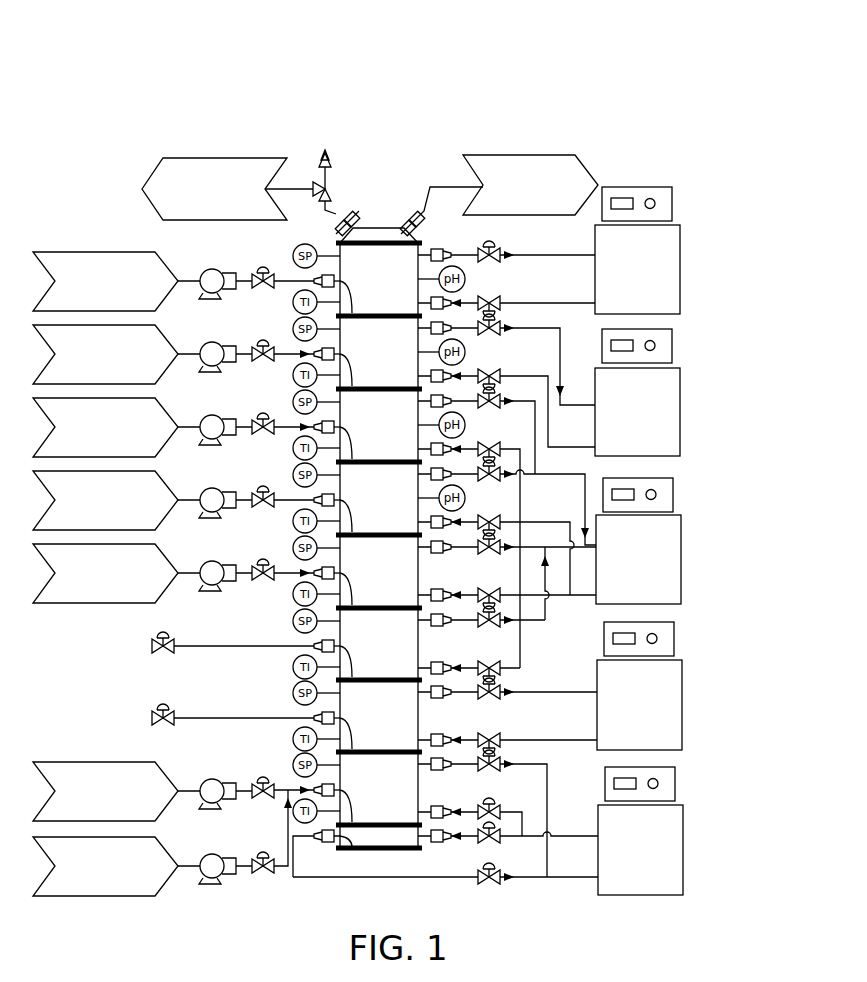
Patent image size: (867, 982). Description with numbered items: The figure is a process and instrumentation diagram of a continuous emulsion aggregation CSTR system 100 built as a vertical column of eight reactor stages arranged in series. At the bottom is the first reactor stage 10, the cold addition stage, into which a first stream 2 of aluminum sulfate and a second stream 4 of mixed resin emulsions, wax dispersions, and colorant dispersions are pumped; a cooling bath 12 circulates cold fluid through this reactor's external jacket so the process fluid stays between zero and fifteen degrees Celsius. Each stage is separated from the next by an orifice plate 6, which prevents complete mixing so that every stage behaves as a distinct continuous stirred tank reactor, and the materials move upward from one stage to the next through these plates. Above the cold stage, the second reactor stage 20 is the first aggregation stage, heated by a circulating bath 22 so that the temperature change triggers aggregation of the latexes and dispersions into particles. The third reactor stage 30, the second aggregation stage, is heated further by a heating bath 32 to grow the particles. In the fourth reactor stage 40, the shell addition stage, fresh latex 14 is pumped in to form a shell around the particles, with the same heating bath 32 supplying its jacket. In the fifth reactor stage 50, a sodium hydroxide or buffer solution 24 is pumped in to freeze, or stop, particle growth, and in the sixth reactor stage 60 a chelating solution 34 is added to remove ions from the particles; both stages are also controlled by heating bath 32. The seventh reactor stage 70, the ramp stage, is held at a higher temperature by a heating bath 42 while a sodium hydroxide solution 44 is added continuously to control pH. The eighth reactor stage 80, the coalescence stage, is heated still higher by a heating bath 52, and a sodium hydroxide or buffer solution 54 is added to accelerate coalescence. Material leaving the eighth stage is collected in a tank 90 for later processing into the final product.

The CSTR system 100 is at (122, 80).
The tank 90 is at (588, 163).
The eighth reactor stage 80 is at (410, 267).
The seventh reactor stage 70 is at (410, 340).
The sixth reactor stage 60 is at (410, 413).
The fifth reactor stage 50 is at (410, 486).
The fourth reactor stage 40 is at (420, 579).
The third reactor stage 30 is at (420, 652).
The second reactor stage 20 is at (420, 724).
The first reactor stage 10 is at (420, 796).
The orifice plate 6 is at (314, 284).
The heating bath 52 is at (713, 228).
The heating bath 42 is at (713, 371).
The heating bath 32 is at (713, 518).
The circulating bath 22 is at (713, 663).
The cooling bath 12 is at (713, 808).
The buffer solution 54 is at (162, 262).
The sodium hydroxide solution 44 is at (162, 335).
The chelating solution 34 is at (162, 408).
The buffer solution 24 is at (162, 481).
The fresh latex 14 is at (162, 554).
The second stream 4 is at (162, 772).
The first stream 2 is at (162, 847).